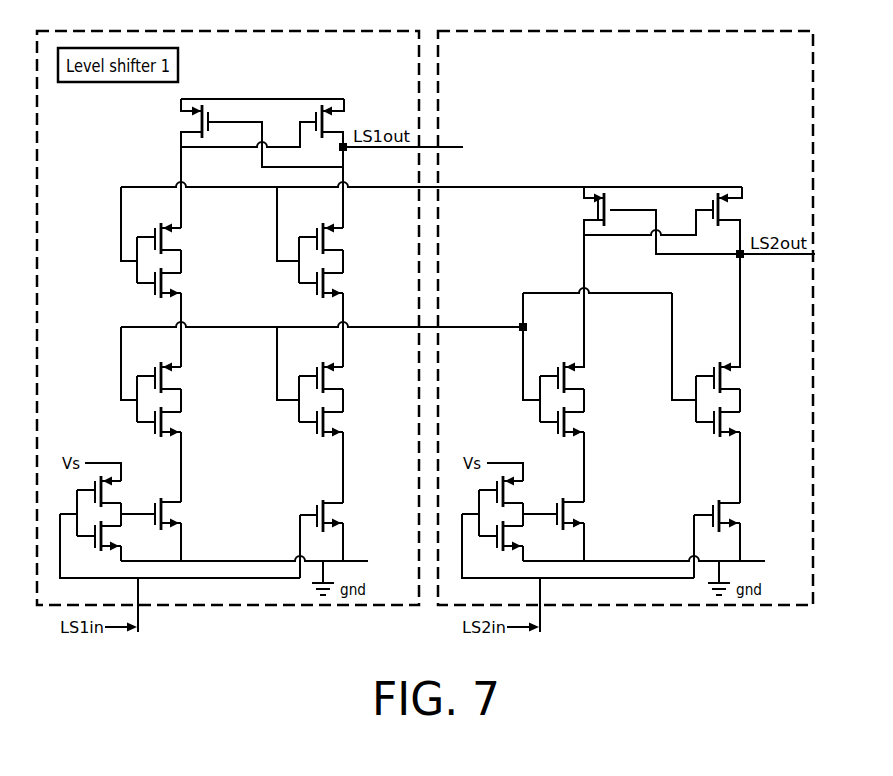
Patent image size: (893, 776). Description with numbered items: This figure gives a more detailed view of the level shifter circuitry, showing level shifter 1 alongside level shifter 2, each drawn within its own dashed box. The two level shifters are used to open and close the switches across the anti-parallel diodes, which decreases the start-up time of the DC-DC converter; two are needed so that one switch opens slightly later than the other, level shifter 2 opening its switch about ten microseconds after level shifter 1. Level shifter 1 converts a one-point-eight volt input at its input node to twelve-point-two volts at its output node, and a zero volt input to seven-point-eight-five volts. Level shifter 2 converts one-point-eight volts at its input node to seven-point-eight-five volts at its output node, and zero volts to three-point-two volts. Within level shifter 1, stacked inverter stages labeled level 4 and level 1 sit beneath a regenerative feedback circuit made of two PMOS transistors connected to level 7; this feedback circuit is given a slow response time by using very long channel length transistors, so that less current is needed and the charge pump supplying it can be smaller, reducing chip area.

The level shifter 1 is at (121, 400).
The level shifter 2 is at (625, 318).
The Level 4 inverter stage 4 is at (121, 261).
The level 7 is at (322, 132).